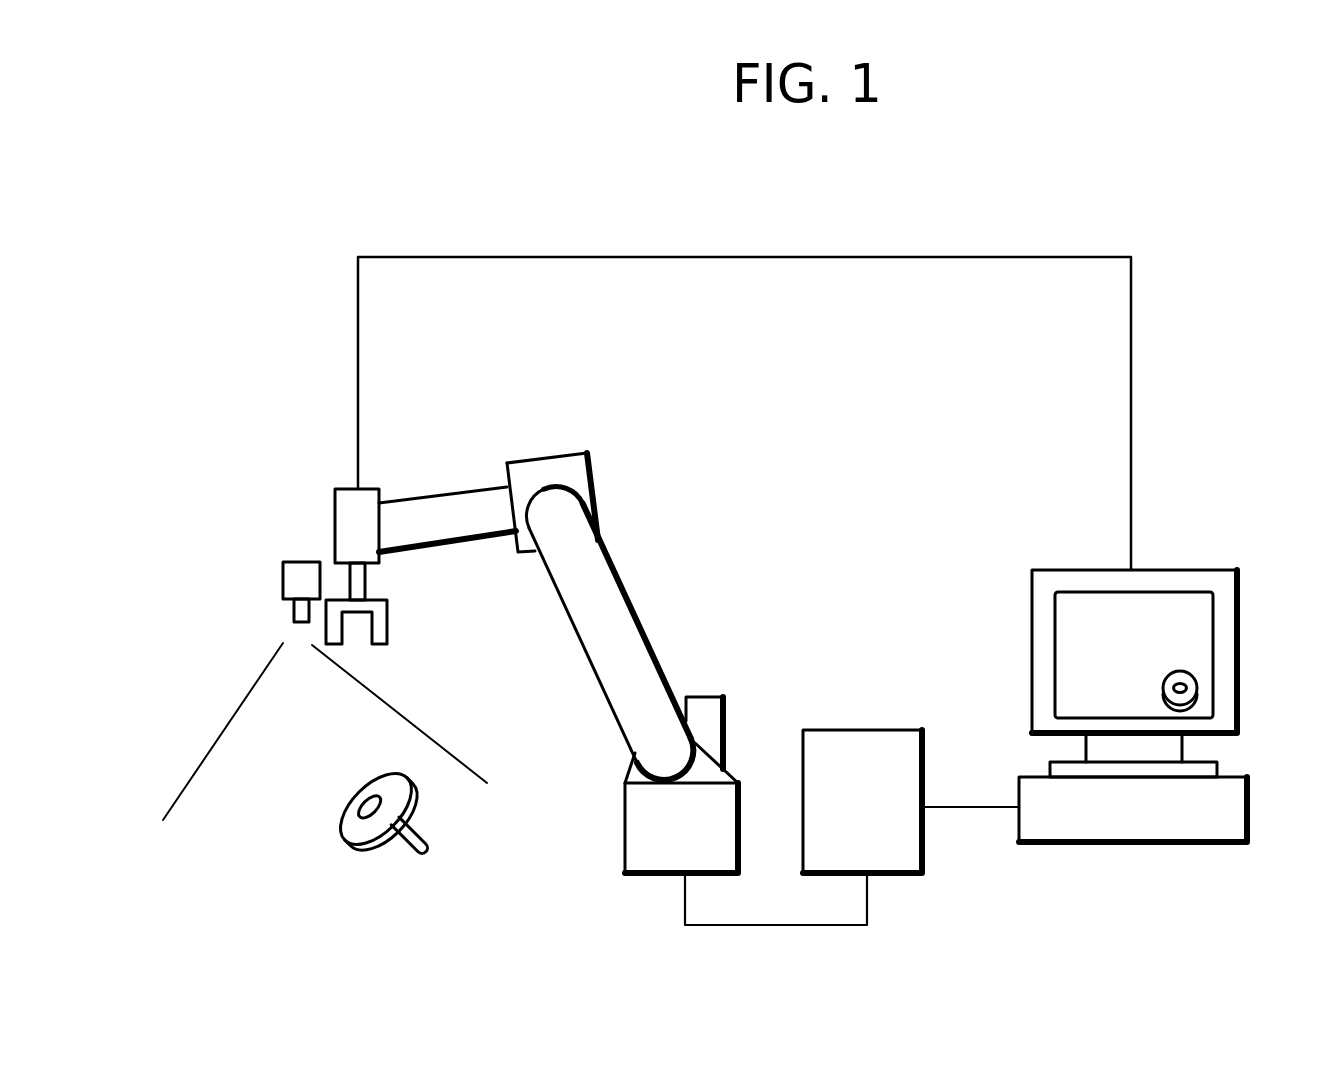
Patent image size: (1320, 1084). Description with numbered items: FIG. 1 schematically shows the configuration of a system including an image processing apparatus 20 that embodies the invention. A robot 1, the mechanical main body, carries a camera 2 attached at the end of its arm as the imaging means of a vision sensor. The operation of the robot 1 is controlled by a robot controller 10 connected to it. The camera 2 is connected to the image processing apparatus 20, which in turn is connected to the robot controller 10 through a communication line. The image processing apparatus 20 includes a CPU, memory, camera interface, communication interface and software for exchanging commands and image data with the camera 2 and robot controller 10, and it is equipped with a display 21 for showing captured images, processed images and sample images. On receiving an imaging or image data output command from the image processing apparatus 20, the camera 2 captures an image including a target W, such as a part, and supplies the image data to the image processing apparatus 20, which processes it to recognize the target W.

The robot 1 is at (643, 583).
The camera 2 is at (250, 572).
The robot controller 10 is at (915, 728).
The image processing apparatus 20 is at (1175, 843).
The display 21 is at (1068, 570).
The target W is at (330, 843).